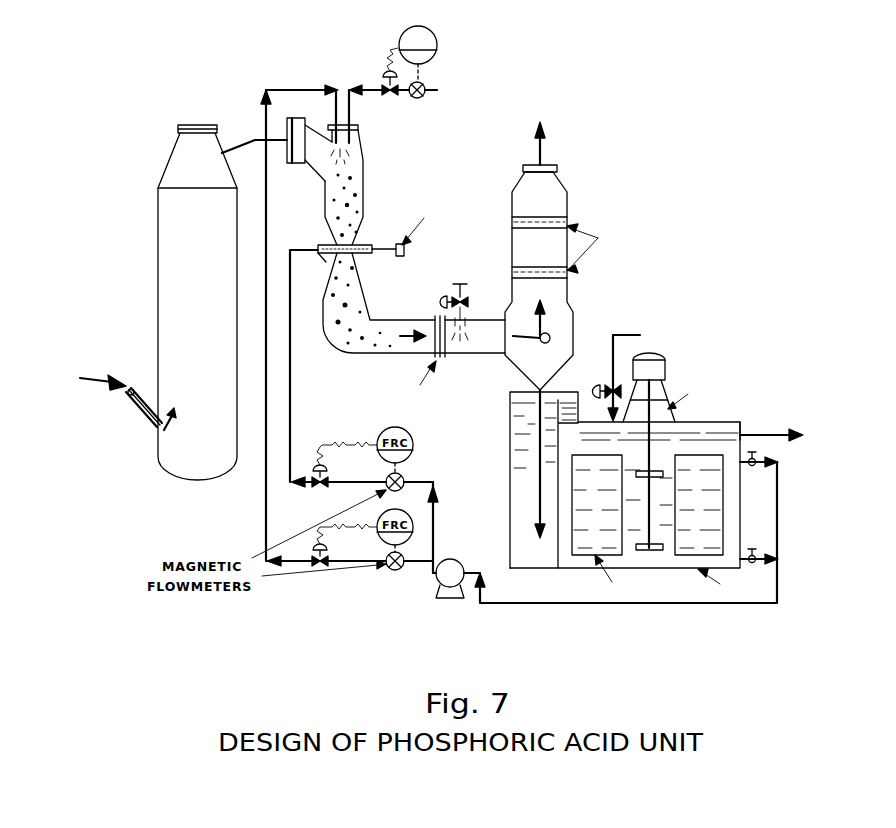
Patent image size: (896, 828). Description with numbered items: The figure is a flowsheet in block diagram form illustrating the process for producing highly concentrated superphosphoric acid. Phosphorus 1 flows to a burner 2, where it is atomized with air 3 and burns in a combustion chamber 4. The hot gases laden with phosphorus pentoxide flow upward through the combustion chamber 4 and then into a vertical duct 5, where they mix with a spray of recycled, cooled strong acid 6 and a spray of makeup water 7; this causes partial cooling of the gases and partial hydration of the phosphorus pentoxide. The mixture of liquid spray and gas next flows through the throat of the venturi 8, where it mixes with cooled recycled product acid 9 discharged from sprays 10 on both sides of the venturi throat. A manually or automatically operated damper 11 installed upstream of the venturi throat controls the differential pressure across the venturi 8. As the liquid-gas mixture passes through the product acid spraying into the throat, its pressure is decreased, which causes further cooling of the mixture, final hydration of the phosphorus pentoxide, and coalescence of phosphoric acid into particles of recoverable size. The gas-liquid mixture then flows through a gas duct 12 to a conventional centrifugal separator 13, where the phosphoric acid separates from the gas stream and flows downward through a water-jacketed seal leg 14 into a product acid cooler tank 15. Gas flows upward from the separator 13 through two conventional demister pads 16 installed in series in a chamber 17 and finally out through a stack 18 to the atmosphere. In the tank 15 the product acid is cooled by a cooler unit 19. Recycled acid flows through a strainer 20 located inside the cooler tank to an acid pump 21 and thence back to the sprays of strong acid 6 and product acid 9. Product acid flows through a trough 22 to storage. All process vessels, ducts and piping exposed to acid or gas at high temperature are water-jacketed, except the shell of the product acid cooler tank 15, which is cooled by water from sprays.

The phosphorus 1 is at (96, 379).
The burner 2 is at (136, 424).
The air 3 is at (140, 390).
The combustion chamber 4 is at (235, 422).
The vertical duct 5 is at (315, 172).
The recycled, cooled strong acid 6 is at (304, 89).
The makeup water 7 is at (370, 89).
The venturi 8 is at (372, 244).
The cooled recycled product acid 9 is at (302, 249).
The sprays 10 is at (325, 260).
The damper 11 is at (400, 258).
The gas duct 12 is at (370, 300).
The centrifugal separator 13 is at (562, 336).
The water-jacketed seal leg 14 is at (510, 483).
The product acid cooler tank 15 is at (708, 422).
The demister pads 16 is at (568, 220).
The chamber 17 is at (511, 240).
The stack 18 is at (542, 152).
The cooler unit 19 is at (741, 426).
The strainer 20 is at (740, 478).
The acid pump 21 is at (455, 562).
The trough 22 is at (778, 432).